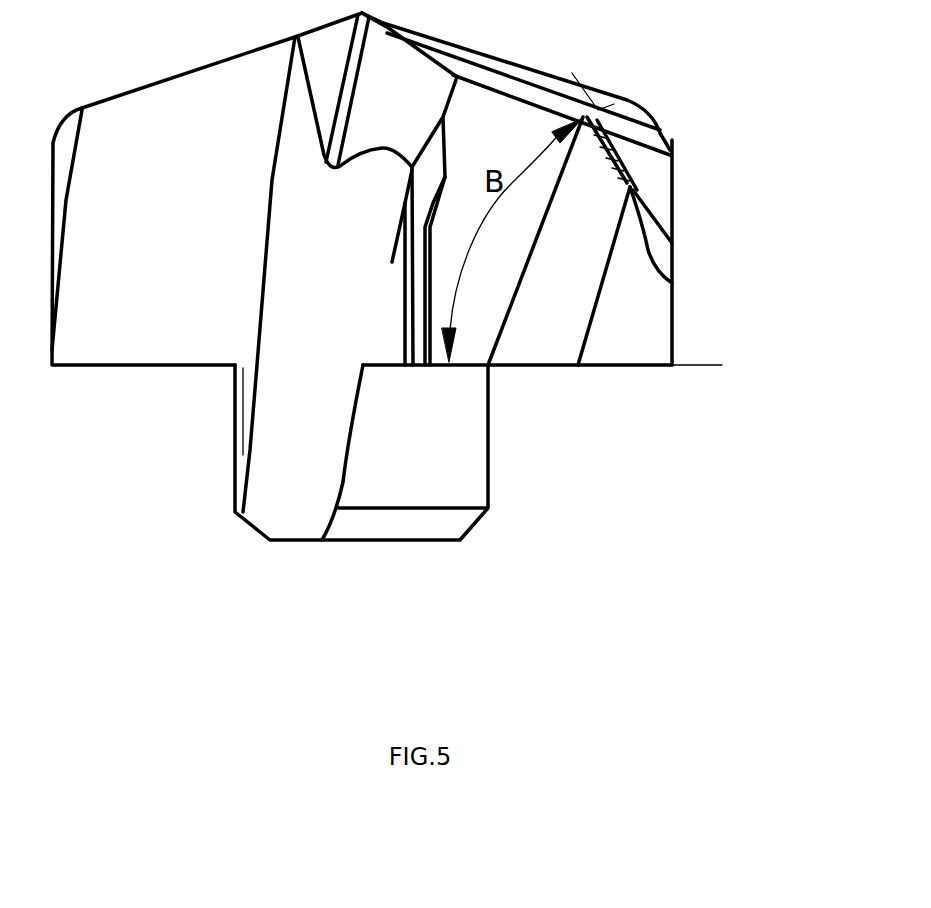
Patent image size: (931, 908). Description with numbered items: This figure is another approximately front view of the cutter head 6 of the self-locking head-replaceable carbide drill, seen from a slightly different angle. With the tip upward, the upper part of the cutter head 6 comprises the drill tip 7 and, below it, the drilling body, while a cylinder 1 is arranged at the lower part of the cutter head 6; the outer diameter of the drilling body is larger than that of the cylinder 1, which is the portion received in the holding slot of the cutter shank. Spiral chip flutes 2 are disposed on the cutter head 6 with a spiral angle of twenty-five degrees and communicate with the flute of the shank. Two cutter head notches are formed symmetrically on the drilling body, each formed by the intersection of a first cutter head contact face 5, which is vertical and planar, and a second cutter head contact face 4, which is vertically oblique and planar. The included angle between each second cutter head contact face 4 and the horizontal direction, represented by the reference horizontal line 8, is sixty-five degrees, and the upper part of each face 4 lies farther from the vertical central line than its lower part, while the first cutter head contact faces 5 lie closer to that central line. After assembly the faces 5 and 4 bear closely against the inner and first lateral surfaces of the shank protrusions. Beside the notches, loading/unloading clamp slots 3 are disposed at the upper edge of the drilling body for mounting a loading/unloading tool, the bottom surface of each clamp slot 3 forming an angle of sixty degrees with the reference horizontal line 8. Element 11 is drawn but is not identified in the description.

The cylinder 1 is at (428, 445).
The spiral chip flute 2 is at (300, 372).
The loading/unloading clamp slot 3 is at (643, 170).
The second cutter head contact face 4 is at (567, 270).
The first cutter head contact face 5 is at (487, 275).
The cutter head 6 is at (647, 128).
The drill tip 7 is at (383, 22).
The reference horizontal line 8 is at (700, 365).
The cutting corner 11 is at (653, 213).